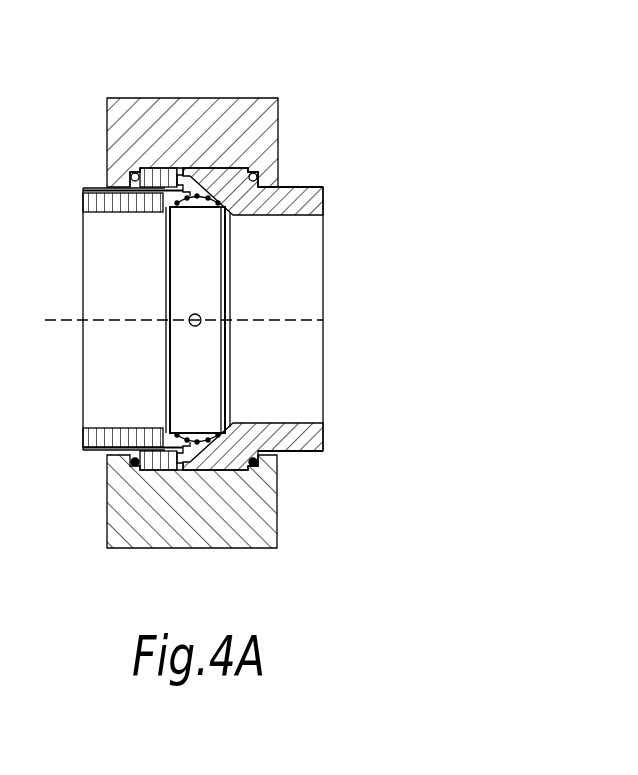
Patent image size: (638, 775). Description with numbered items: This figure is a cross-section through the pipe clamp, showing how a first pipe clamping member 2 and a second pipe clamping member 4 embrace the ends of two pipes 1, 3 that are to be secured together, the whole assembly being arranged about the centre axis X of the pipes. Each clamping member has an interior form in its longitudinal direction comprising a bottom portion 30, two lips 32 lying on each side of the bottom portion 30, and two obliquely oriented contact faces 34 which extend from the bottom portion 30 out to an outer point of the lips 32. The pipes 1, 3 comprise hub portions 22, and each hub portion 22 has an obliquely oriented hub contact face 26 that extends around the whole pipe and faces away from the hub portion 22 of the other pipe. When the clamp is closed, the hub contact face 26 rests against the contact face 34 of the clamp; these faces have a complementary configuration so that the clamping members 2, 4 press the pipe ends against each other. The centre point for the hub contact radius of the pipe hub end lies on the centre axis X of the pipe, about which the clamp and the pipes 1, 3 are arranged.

The pipe 1 is at (87, 203).
The first pipe clamping member 2 is at (265, 110).
The pipe 3 is at (312, 203).
The second pipe clamping member 4 is at (262, 543).
The hub portion 22 is at (178, 186).
The hub contact face 26 is at (133, 155).
The bottom portion 30 is at (212, 182).
The lips 32 is at (113, 175).
The contact faces 34 is at (257, 184).
The centre axis X is at (63, 320).